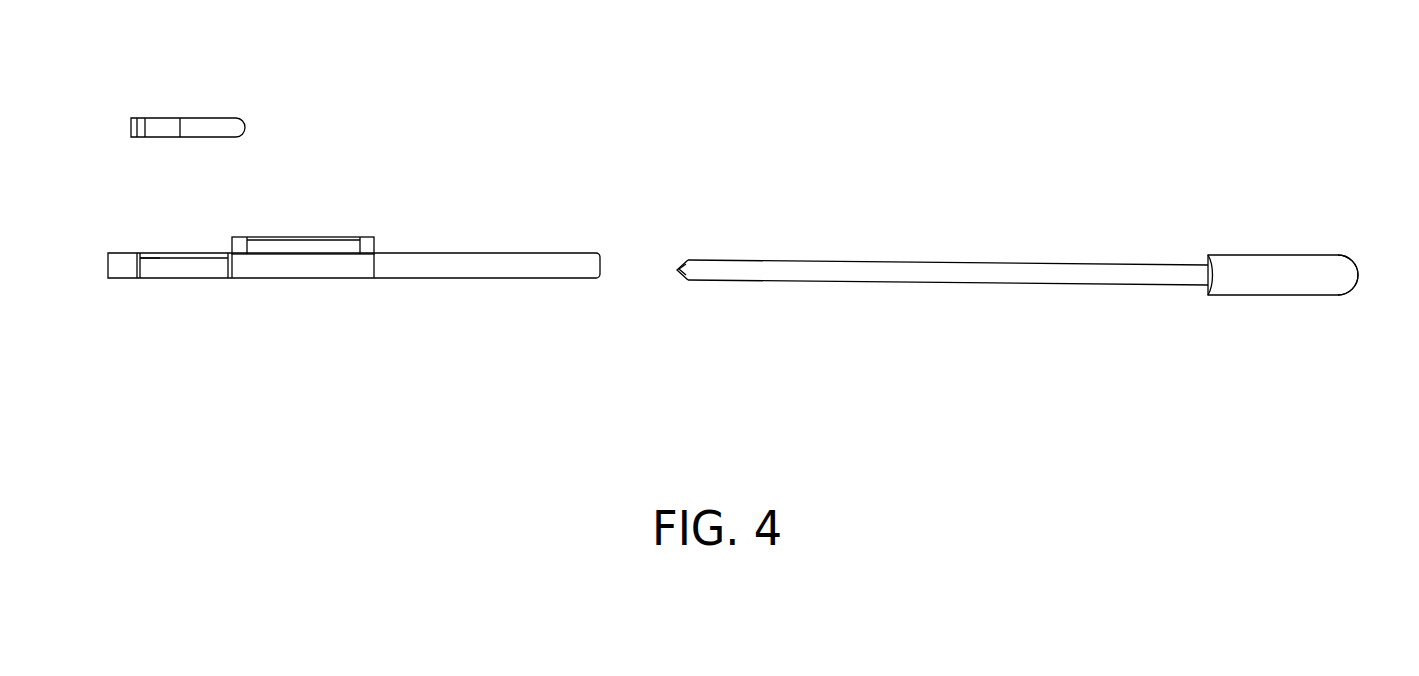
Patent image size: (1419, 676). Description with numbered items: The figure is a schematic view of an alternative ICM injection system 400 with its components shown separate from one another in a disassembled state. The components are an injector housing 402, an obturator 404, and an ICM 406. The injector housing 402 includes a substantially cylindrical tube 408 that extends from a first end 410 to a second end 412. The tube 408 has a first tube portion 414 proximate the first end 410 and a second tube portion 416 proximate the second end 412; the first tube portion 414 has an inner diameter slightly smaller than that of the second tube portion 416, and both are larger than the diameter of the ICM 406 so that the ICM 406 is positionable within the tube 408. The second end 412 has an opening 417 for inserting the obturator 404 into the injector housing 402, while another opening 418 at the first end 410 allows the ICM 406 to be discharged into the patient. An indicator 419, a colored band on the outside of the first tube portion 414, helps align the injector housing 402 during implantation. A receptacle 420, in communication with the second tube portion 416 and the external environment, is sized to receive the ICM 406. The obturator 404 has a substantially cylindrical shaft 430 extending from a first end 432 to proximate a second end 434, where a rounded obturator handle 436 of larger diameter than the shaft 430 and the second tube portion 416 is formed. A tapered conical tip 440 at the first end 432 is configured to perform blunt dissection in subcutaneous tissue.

The injection system 400 is at (942, 96).
The injector housing 402 is at (458, 256).
The obturator 404 is at (962, 262).
The ICM 406 is at (203, 118).
The tube 408 is at (212, 253).
The first end 410 is at (107, 268).
The second end 412 is at (606, 270).
The first tube portion 414 is at (193, 278).
The second tube portion 416 is at (492, 278).
The opening 417 is at (607, 259).
The opening 418 is at (104, 257).
The indicator 419 is at (147, 254).
The receptacle 420 is at (365, 237).
The cylindrical shaft 430 is at (890, 271).
The first end 432 is at (685, 281).
The second end 434 is at (1357, 278).
The obturator handle 436 is at (1268, 278).
The tip 440 is at (685, 262).